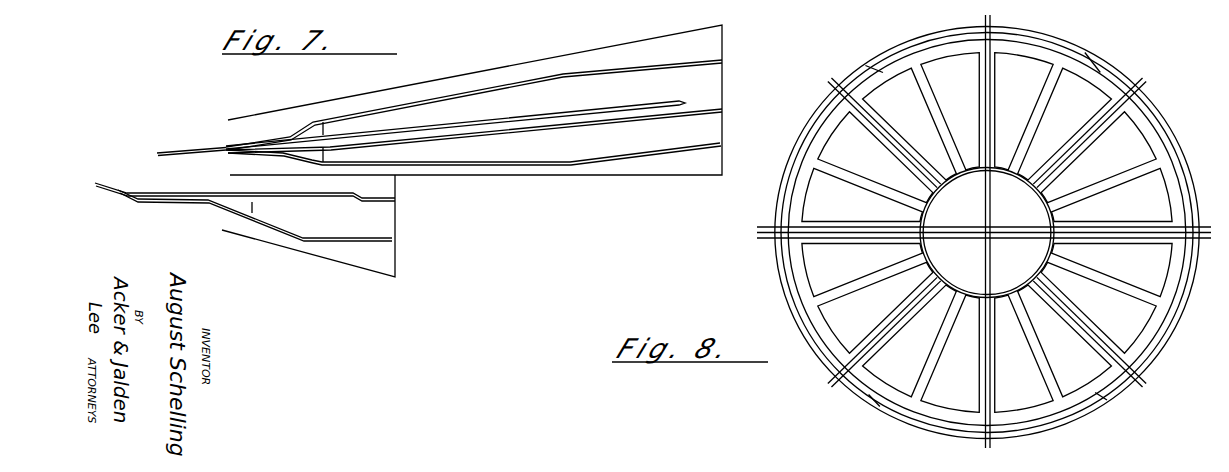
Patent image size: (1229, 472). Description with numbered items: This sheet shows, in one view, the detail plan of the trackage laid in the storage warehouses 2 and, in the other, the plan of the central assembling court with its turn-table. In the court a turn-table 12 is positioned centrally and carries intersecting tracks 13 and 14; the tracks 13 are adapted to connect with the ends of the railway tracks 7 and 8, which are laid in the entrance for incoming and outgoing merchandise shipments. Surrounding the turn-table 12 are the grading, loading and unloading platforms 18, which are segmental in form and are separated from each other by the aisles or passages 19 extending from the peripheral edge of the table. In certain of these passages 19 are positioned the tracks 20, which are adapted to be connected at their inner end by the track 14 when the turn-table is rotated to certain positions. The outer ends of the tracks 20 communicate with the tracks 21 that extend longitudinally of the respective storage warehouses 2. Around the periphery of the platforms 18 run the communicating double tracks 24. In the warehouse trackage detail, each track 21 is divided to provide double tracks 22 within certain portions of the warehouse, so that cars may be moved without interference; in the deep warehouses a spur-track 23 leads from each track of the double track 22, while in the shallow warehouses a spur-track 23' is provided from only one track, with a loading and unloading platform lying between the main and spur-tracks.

In FIG. 7, the storage warehouses 2 is at (472, 151).
In FIG. 7, the tracks 21 is at (185, 149).
In FIG. 7, the double tracks 22 is at (510, 125).
In FIG. 7, the spur-track 23 is at (474, 109).
In FIG. 7, the spur-track 23' is at (255, 215).
In FIG. 8, the railway track 7 is at (763, 226).
In FIG. 8, the railway track 8 is at (766, 237).
In FIG. 8, the turn-table 12 is at (987, 233).
In FIG. 8, the tracks 13 is at (1168, 237).
In FIG. 8, the track 14 is at (989, 270).
In FIG. 8, the grading, loading and unloading platforms 18 is at (1112, 222).
In FIG. 8, the aisles or passages 19 is at (1143, 163).
In FIG. 8, the tracks 20 is at (1145, 382).
In FIG. 8, the communicating double tracks 24 is at (922, 413).